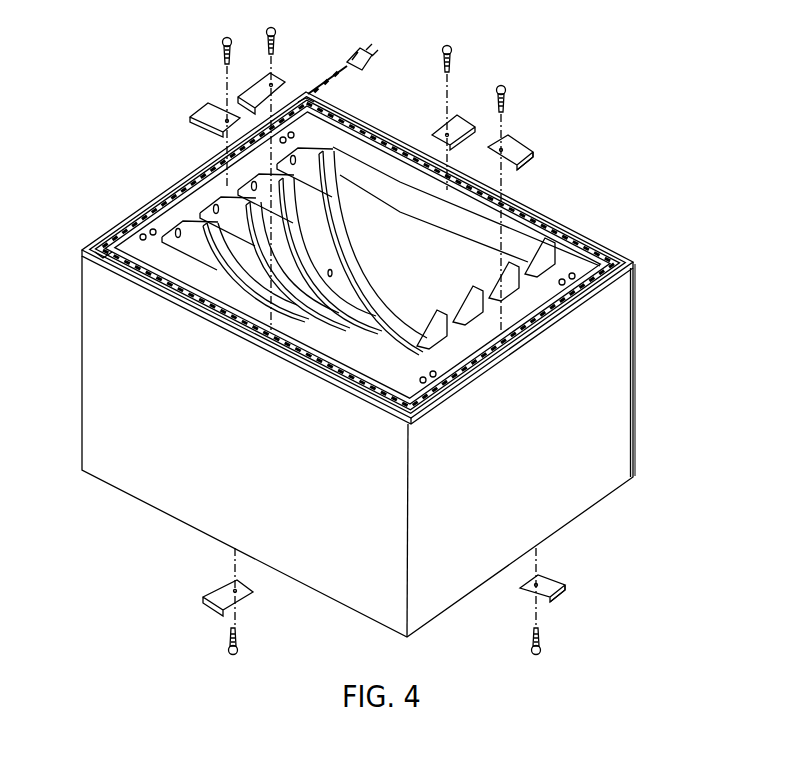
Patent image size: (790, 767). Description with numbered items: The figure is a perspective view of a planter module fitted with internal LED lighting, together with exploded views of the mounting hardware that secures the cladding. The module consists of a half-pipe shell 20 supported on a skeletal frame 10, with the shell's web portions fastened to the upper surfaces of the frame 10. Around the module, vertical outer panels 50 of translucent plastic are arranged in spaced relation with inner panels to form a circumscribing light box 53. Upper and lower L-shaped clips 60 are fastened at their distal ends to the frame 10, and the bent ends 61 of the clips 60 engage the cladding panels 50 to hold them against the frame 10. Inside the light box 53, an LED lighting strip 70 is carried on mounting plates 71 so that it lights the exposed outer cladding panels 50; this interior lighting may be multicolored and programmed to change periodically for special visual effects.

The frame 10 is at (482, 227).
The shell 20 is at (386, 267).
The outer panel 50 is at (90, 370).
The light box 53 is at (604, 231).
The L-shaped clip 60 is at (213, 110).
The bent end 61 is at (531, 161).
The LED lighting strip 70 is at (366, 137).
The mounting plate 71 is at (328, 136).